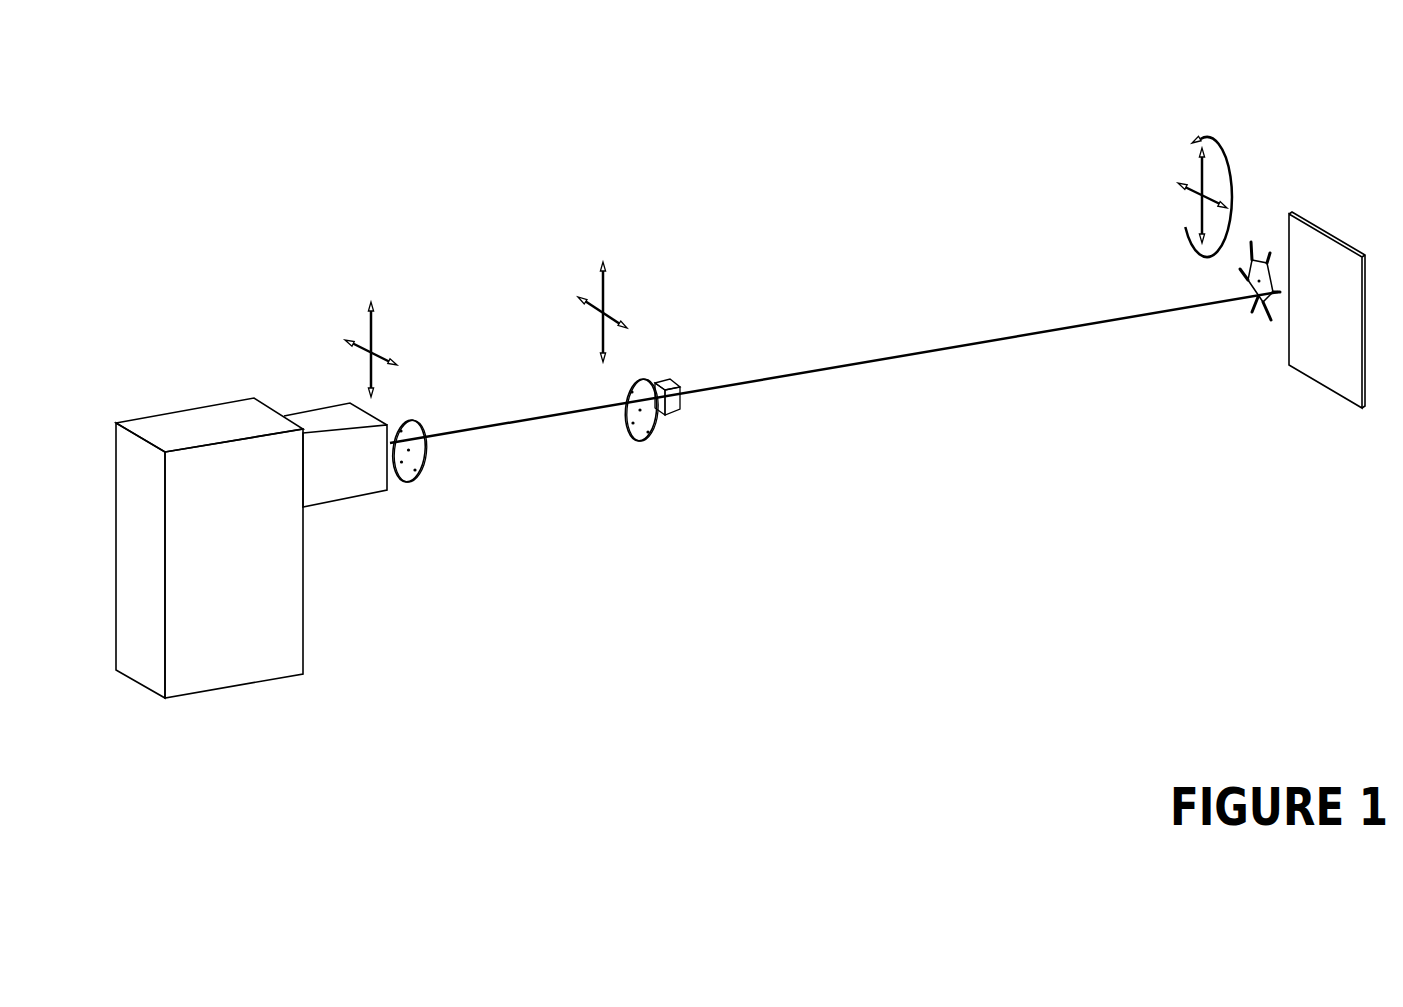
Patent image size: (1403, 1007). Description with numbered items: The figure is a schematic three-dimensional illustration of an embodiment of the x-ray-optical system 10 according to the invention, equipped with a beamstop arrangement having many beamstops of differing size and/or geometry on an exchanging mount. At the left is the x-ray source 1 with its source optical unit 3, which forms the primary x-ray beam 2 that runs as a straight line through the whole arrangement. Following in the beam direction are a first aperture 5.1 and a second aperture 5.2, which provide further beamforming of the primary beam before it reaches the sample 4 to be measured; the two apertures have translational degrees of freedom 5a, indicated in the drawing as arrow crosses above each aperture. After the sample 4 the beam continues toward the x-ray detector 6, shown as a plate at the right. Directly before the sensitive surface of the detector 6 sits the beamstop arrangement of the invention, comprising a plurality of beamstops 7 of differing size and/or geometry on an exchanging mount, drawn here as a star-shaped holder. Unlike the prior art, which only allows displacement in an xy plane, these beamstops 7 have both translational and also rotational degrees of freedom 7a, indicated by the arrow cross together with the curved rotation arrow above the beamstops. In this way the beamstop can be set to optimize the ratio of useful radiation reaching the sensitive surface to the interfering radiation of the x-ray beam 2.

The x-ray-optical system 10 is at (322, 128).
The x-ray source 1 is at (256, 555).
The source optical unit 3 is at (363, 502).
The primary x-ray beam 2 is at (834, 460).
The first aperture 5.1 is at (484, 492).
The second aperture 5.2 is at (690, 477).
The translational degrees of freedom 5a is at (603, 312).
The sample 4 is at (722, 430).
The beamstops 7 is at (1232, 326).
The translational and rotational degrees of freedom 7a is at (1151, 196).
The x-ray detector 6 is at (1271, 348).